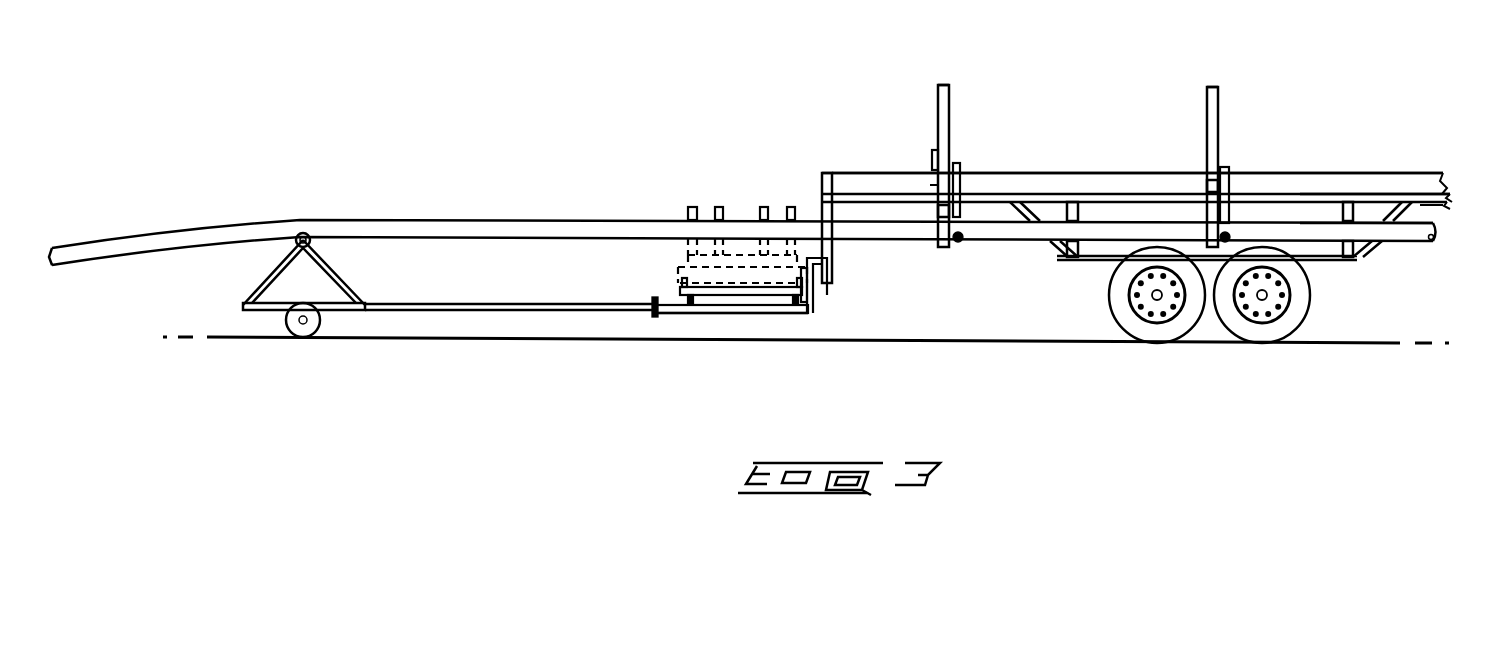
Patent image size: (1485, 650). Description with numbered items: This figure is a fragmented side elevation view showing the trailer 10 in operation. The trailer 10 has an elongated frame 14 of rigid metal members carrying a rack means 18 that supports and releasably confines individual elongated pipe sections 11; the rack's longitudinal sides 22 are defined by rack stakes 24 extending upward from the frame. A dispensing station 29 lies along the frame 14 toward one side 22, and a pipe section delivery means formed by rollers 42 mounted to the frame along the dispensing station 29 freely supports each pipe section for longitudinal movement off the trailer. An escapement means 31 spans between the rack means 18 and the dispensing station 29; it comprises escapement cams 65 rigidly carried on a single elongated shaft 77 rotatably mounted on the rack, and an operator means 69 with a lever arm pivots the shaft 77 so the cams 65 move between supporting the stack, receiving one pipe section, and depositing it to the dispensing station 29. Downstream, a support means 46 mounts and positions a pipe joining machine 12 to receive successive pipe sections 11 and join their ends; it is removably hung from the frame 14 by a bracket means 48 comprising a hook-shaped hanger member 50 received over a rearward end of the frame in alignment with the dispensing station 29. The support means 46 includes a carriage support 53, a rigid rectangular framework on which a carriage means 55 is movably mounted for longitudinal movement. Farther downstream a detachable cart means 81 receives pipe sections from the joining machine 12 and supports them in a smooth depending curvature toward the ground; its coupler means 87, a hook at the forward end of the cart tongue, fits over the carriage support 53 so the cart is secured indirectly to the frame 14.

The trailer 10 is at (1152, 75).
The elongated pipe sections 11 is at (1320, 235).
The pipe joining machine 12 is at (792, 207).
The elongated frame 14 is at (1375, 188).
The rack means 18 is at (951, 115).
The longitudinal sides 22 is at (1045, 183).
The rack stakes 24 is at (947, 93).
The dispensing station 29 is at (998, 250).
The escapement means 31 is at (963, 167).
The rollers 42 is at (958, 243).
The support means 46 is at (783, 323).
The bracket means 48 is at (813, 303).
The hanger member 50 is at (830, 262).
The carriage support 53 is at (748, 313).
The carriage means 55 is at (727, 293).
The escapement cams 65 is at (946, 211).
The operator means 69 is at (933, 160).
The shaft 77 is at (935, 185).
The detachable cart means 81 is at (370, 280).
The coupler means 87 is at (645, 293).